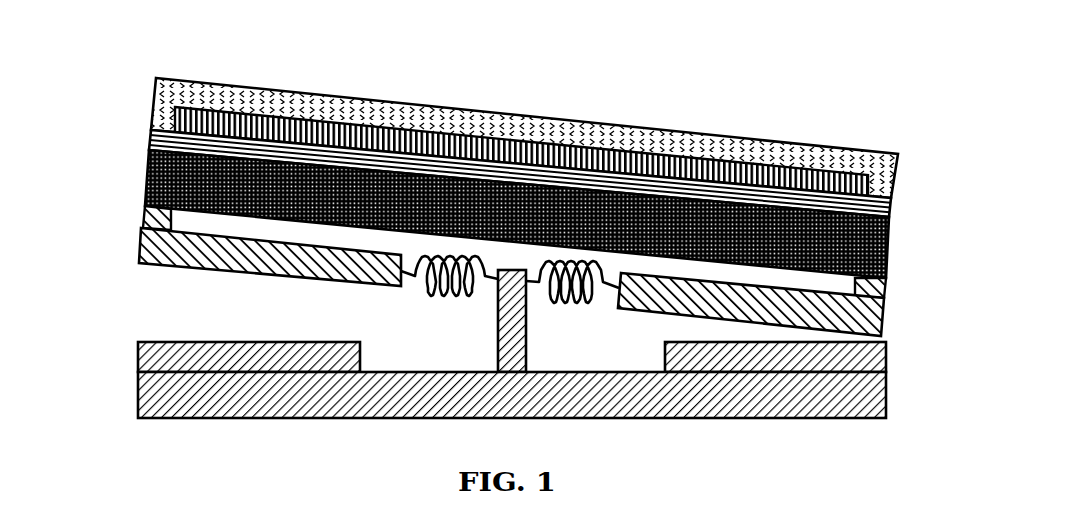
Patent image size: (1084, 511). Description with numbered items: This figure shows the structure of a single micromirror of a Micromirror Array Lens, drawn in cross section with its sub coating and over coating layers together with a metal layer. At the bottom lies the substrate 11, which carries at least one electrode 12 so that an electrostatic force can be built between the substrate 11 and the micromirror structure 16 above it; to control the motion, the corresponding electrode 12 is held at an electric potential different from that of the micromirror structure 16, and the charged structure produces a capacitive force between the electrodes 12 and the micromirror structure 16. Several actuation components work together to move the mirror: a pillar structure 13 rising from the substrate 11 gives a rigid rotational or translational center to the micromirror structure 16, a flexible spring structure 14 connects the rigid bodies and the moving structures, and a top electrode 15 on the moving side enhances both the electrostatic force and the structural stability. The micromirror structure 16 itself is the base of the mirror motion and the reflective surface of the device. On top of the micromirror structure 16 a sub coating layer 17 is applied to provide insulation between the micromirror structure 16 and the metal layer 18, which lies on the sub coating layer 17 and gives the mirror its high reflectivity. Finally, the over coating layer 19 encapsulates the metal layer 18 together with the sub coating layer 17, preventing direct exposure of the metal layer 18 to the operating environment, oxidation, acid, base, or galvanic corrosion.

The substrate 11 is at (860, 395).
The electrode 12 is at (858, 350).
The pillar structure 13 is at (520, 313).
The flexible spring structure 14 is at (420, 281).
The top electrode 15 is at (130, 237).
The micromirror structure 16 is at (140, 160).
The sub coating layer 17 is at (817, 207).
The metal layer 18 is at (862, 177).
The over coating layer 19 is at (803, 143).